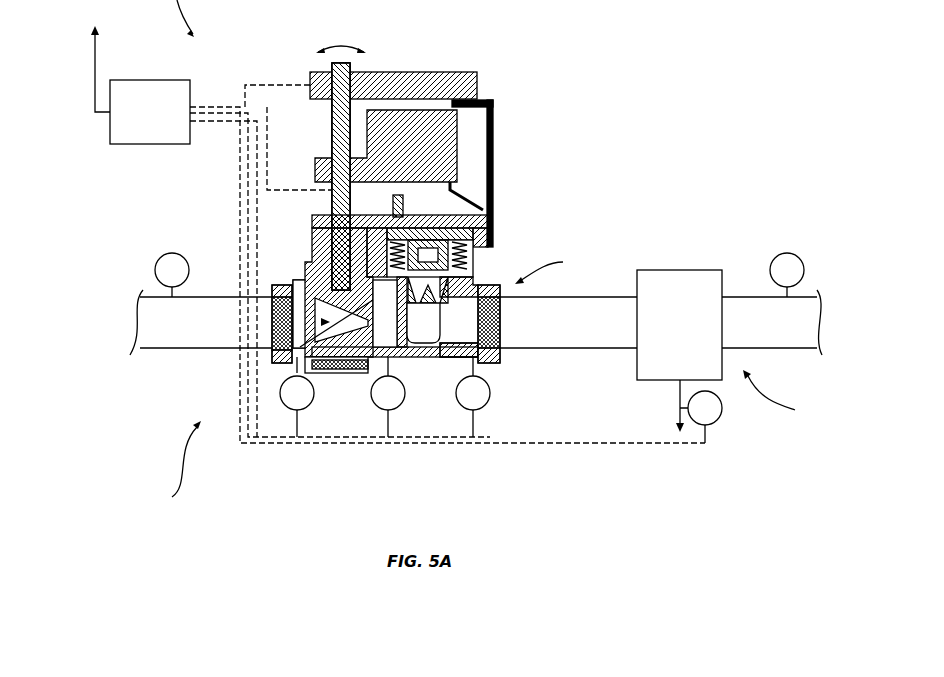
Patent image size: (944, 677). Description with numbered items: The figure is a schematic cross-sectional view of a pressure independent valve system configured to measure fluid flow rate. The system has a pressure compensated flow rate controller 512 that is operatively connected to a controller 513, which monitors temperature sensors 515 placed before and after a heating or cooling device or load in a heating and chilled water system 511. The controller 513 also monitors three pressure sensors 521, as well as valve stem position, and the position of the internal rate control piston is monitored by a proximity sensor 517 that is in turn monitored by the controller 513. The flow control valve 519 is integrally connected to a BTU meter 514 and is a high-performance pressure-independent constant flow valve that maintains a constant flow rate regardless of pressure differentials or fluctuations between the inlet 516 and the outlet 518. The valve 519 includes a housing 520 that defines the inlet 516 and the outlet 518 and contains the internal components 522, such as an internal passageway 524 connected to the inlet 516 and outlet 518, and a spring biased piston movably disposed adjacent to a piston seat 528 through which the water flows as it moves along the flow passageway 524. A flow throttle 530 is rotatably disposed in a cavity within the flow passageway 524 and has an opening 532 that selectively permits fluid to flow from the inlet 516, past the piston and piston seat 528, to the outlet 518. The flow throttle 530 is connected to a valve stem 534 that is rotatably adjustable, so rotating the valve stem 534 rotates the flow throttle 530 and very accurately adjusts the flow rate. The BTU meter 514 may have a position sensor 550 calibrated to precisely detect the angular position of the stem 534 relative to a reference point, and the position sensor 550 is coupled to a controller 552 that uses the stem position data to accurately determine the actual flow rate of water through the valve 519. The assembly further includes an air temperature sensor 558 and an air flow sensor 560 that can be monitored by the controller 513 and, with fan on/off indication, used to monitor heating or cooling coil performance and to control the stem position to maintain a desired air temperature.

The heating and chilled water system 511 is at (478, 353).
The pressure compensated flow rate controller 512 is at (168, 465).
The controller 513 is at (143, 80).
The BTU meter 514 is at (477, 85).
The temperature sensors 515 is at (165, 254).
The inlet 516 is at (271, 318).
The proximity sensor 517 is at (447, 190).
The outlet 518 is at (507, 322).
The flow control valve 519 is at (555, 266).
The housing 520 is at (490, 352).
The pressure sensors 521 is at (462, 406).
The internal components 522 is at (475, 265).
The internal passageway 524 is at (484, 366).
The piston seat 528 is at (497, 305).
The flow throttle 530 is at (320, 323).
The opening 532 is at (300, 347).
The valve stem 534 is at (318, 198).
The position sensor 550 is at (365, 72).
The controller 552 is at (165, 97).
The air temperature sensor 558 is at (719, 418).
The air flow sensor 560 is at (660, 270).